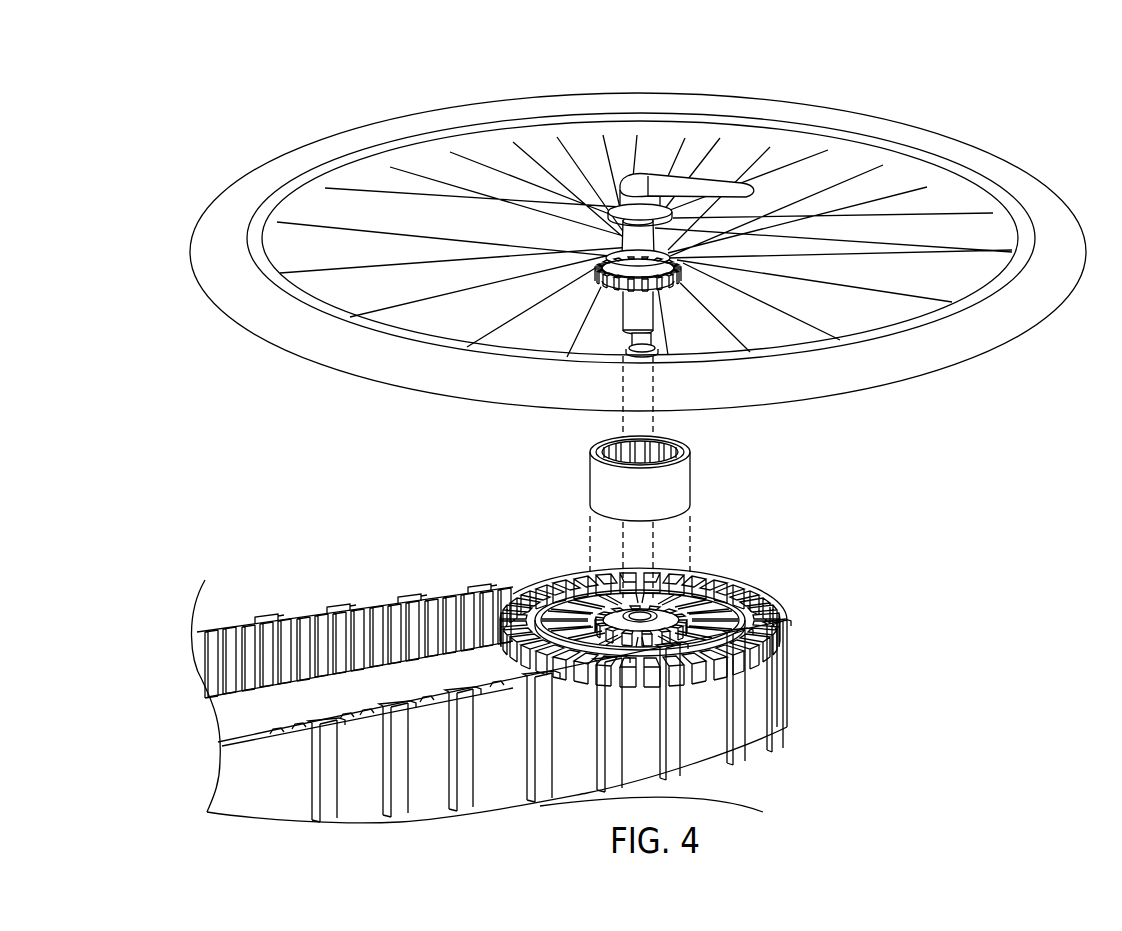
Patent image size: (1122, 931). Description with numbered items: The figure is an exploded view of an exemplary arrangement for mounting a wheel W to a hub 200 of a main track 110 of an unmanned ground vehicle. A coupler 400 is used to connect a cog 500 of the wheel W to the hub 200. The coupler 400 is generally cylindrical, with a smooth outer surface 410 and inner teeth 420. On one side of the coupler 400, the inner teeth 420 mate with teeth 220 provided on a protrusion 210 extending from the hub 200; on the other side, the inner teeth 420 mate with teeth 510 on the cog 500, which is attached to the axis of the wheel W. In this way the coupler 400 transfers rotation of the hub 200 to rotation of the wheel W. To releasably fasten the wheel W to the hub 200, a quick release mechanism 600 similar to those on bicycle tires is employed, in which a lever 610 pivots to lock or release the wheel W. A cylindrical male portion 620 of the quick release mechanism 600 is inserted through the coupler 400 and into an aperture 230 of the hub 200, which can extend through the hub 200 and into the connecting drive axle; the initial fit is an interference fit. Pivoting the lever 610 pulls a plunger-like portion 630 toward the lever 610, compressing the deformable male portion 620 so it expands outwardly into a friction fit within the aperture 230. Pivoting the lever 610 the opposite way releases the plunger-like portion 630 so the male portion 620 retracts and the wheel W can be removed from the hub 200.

The wheel W is at (1044, 194).
The main track 110 is at (638, 748).
The hub 200 is at (652, 610).
The protrusion 210 is at (672, 600).
The teeth 220 is at (683, 648).
The aperture 230 is at (635, 605).
The coupler 400 is at (629, 503).
The smooth outer surface 410 is at (680, 487).
The inner teeth 420 is at (605, 449).
The cog 500 is at (670, 294).
The teeth 510 is at (662, 300).
The quick release mechanism 600 is at (688, 332).
The lever 610 is at (755, 190).
The cylindrical male portion 620 is at (630, 308).
The plunger-like portion 630 is at (628, 343).